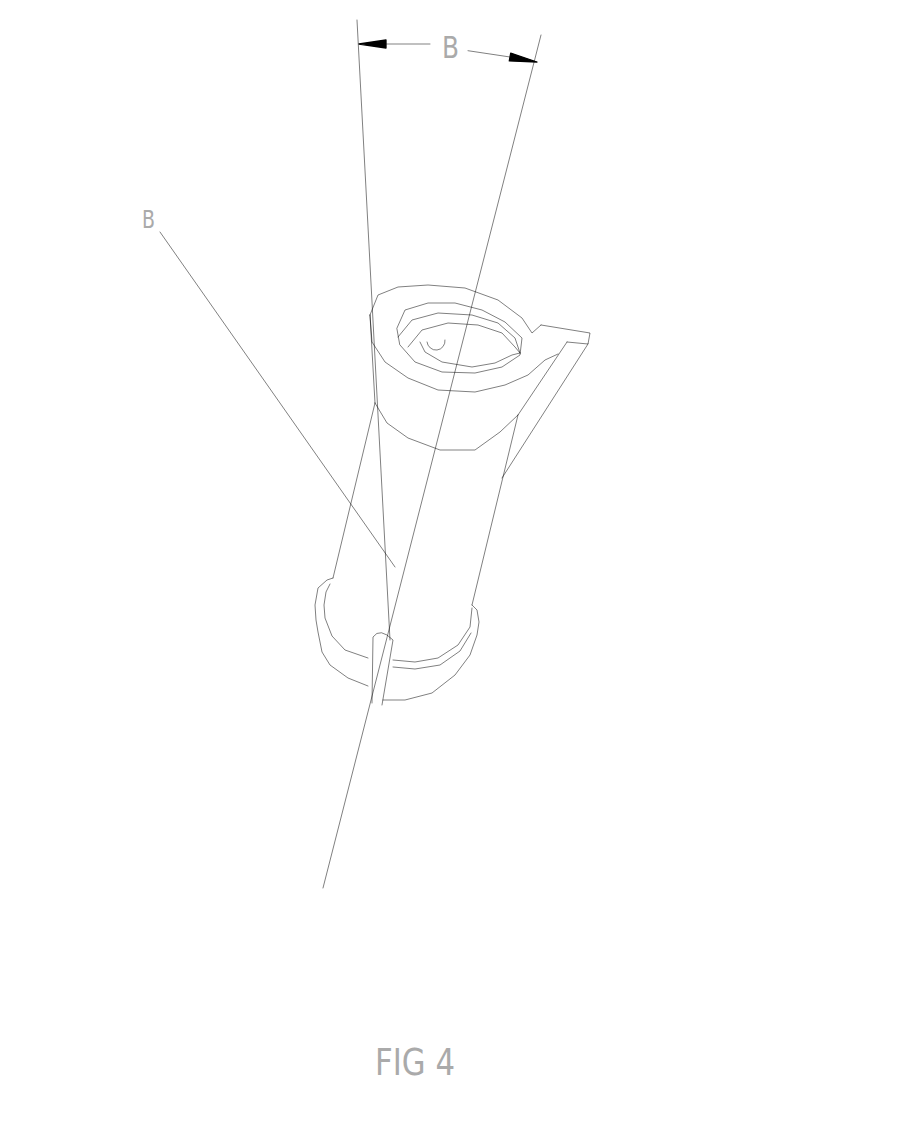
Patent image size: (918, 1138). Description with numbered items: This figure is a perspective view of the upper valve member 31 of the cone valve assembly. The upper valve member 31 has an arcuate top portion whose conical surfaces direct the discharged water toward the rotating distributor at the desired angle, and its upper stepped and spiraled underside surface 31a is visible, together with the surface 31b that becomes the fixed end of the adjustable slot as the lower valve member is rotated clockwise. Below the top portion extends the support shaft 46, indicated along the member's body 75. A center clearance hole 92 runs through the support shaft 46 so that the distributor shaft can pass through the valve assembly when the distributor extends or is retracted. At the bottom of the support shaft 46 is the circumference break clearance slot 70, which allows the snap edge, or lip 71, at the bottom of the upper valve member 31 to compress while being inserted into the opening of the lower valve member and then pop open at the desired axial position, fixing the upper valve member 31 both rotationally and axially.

The upper valve member 31 is at (407, 388).
The upper stepped and spiraled underside surface 31a is at (537, 363).
The surface forming fixed end of adjustable slot 31b is at (555, 382).
The support shaft 46 is at (368, 528).
The circumference break clearance slot 70 is at (353, 688).
The snap edge or lip 71 is at (503, 630).
The cylindrical body 75 is at (523, 523).
The center clearance hole 92 is at (442, 337).